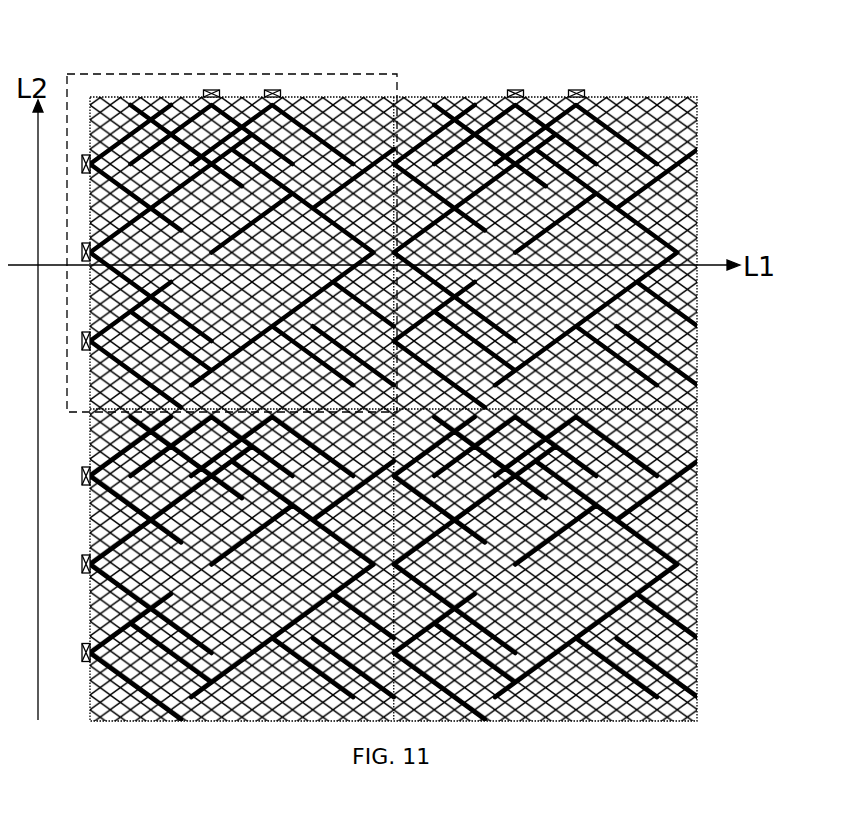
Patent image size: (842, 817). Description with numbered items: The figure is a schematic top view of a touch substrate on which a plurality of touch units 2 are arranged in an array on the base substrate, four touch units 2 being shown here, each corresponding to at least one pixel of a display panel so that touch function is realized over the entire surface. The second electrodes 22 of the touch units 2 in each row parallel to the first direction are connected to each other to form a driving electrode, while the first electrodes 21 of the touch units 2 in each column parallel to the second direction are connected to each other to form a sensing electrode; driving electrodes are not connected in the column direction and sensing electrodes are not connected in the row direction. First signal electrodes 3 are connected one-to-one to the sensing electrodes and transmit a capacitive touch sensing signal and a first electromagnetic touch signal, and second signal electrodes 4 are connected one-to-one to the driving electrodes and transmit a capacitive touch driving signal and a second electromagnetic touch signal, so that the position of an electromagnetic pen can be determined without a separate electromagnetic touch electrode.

The touch unit 2 is at (397, 74).
The first electrode 21 is at (178, 110).
The second electrode 22 is at (692, 143).
The first signal electrode 3 is at (580, 90).
The second signal electrode 4 is at (84, 662).